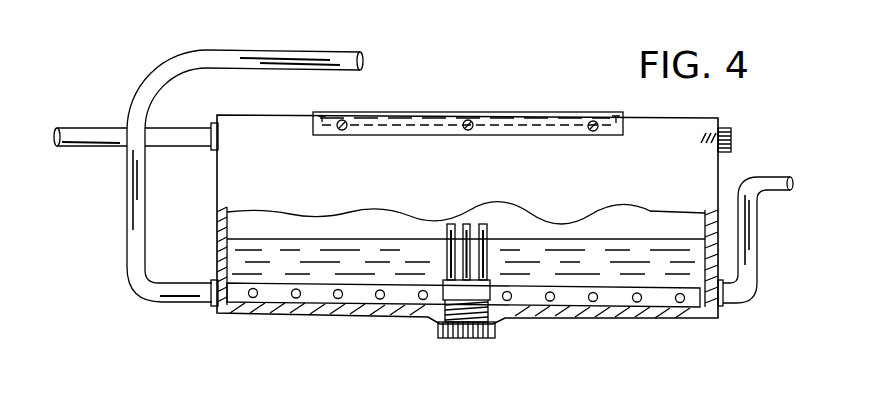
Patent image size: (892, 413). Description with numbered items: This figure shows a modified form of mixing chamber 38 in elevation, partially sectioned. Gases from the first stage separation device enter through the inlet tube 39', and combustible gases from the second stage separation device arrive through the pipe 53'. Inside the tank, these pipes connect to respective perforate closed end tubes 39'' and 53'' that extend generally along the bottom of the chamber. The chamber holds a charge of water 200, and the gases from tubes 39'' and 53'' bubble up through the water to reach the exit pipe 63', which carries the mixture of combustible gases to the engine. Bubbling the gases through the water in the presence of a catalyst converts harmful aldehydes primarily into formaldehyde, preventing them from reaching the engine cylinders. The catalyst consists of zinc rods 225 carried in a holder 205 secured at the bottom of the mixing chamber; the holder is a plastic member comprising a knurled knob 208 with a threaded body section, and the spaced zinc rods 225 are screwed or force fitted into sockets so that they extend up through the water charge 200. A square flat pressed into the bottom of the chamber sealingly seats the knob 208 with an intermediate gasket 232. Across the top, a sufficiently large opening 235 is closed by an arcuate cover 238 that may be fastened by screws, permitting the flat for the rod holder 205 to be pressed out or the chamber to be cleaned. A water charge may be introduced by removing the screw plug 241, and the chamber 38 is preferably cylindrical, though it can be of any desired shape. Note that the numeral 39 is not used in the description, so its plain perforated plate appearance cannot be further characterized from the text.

The mixing chamber 38 is at (300, 83).
The pipe 53' is at (245, 153).
The perforate closed end tube 53'' is at (249, 316).
The pipe 63' is at (136, 112).
The arcuate cover 238 is at (538, 115).
The opening 235 is at (425, 128).
The screw plug 241 is at (731, 145).
The water charge 200 is at (643, 252).
The perforated plate 39 is at (463, 261).
The zinc rods 225 is at (490, 233).
The holder 205 is at (433, 337).
The gasket 232 is at (498, 323).
The knurled knob 208 is at (466, 351).
The perforate closed end tube 39'' is at (532, 402).
The inlet tube 39' is at (795, 404).